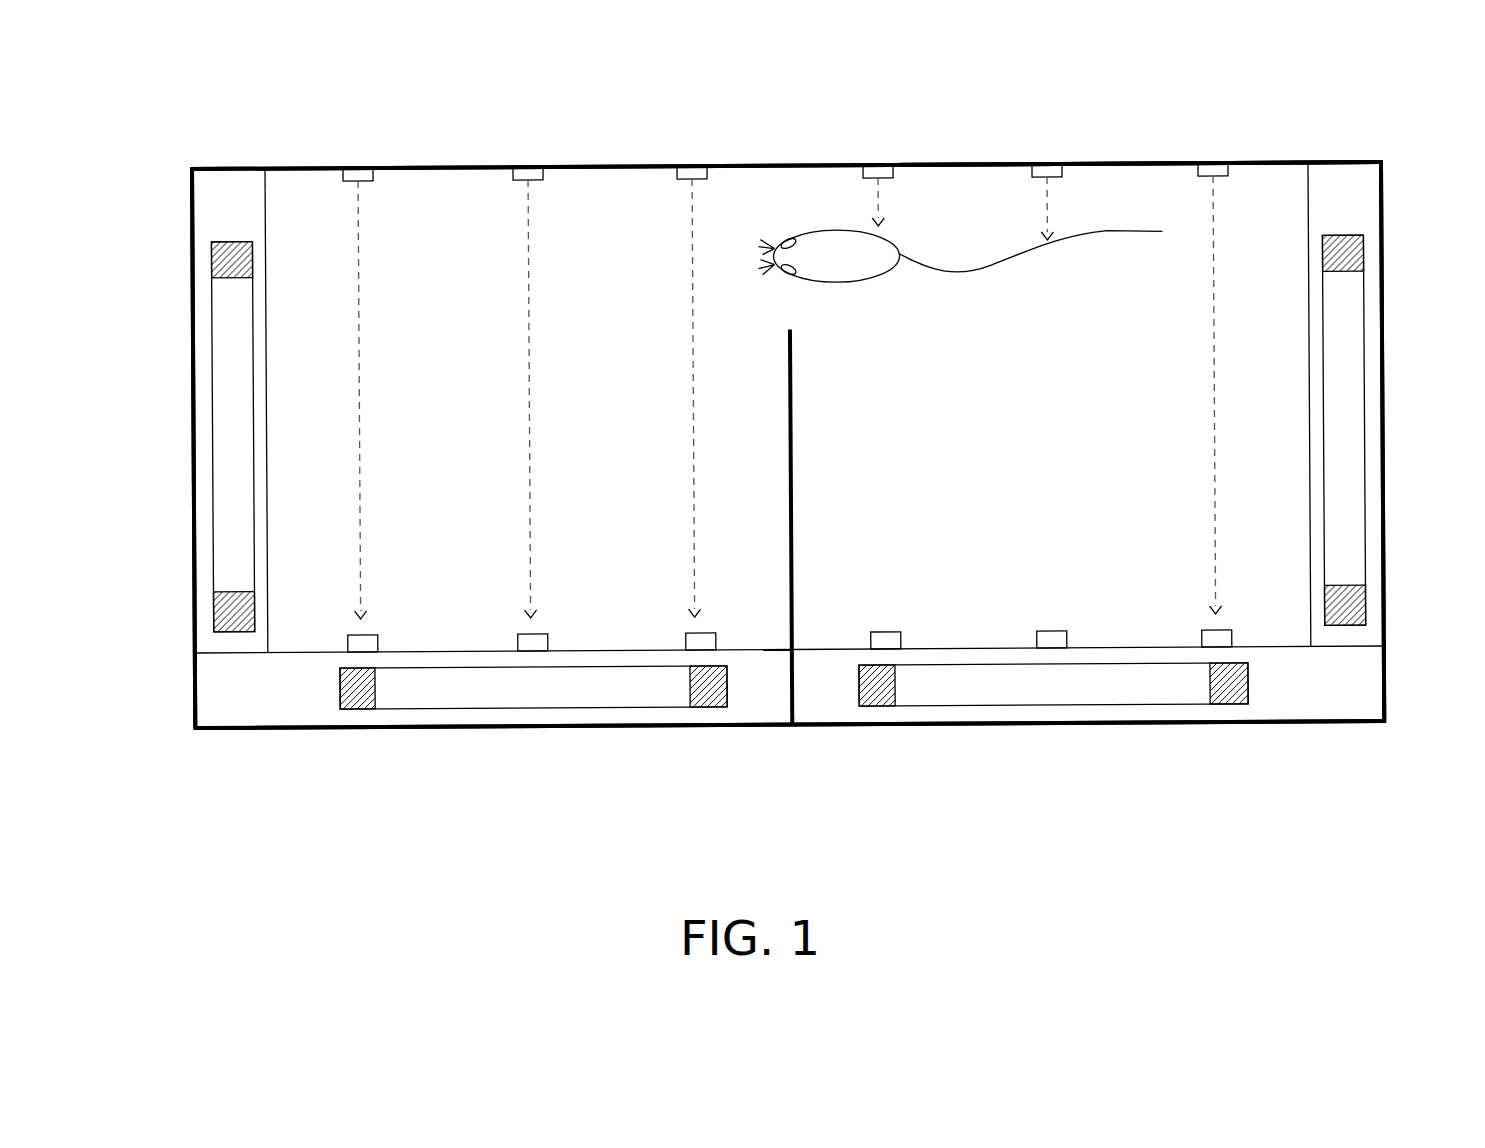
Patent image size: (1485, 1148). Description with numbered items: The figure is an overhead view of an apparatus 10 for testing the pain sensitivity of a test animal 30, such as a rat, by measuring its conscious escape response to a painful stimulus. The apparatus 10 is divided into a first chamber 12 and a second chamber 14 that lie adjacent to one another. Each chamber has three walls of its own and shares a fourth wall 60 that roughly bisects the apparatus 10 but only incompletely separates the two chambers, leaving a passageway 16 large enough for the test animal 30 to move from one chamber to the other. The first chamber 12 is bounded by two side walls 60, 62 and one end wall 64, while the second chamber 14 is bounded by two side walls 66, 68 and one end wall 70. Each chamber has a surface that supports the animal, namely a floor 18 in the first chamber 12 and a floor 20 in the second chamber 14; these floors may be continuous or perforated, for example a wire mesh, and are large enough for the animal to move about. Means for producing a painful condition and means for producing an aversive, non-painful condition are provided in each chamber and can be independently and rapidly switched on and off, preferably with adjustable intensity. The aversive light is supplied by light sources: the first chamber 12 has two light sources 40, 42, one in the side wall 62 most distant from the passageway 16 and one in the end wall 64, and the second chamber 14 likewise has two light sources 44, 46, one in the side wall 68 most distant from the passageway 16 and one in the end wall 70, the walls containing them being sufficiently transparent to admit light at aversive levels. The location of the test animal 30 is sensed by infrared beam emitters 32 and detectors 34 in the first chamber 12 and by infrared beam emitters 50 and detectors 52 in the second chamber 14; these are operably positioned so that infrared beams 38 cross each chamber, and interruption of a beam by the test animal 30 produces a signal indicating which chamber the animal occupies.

The apparatus 10 is at (1112, 160).
The first chamber 12 is at (213, 192).
The second chamber 14 is at (1336, 193).
The passageway 16 is at (788, 305).
The floor 18 is at (632, 597).
The floor 20 is at (993, 580).
The test animal 30 is at (817, 240).
The infrared beam emitter 32 is at (687, 164).
The detector 34 is at (695, 650).
The infrared beam 38 is at (690, 287).
The light source 40 is at (1358, 393).
The light source 42 is at (1163, 673).
The light source 44 is at (230, 245).
The light source 46 is at (462, 695).
The infrared beam emitter 50 is at (880, 162).
The detector 52 is at (882, 643).
The fourth wall 60 is at (402, 164).
The side wall 62 is at (355, 733).
The end wall 64 is at (193, 682).
The side wall 66 is at (1000, 160).
The side wall 68 is at (1088, 725).
The end wall 70 is at (1387, 582).